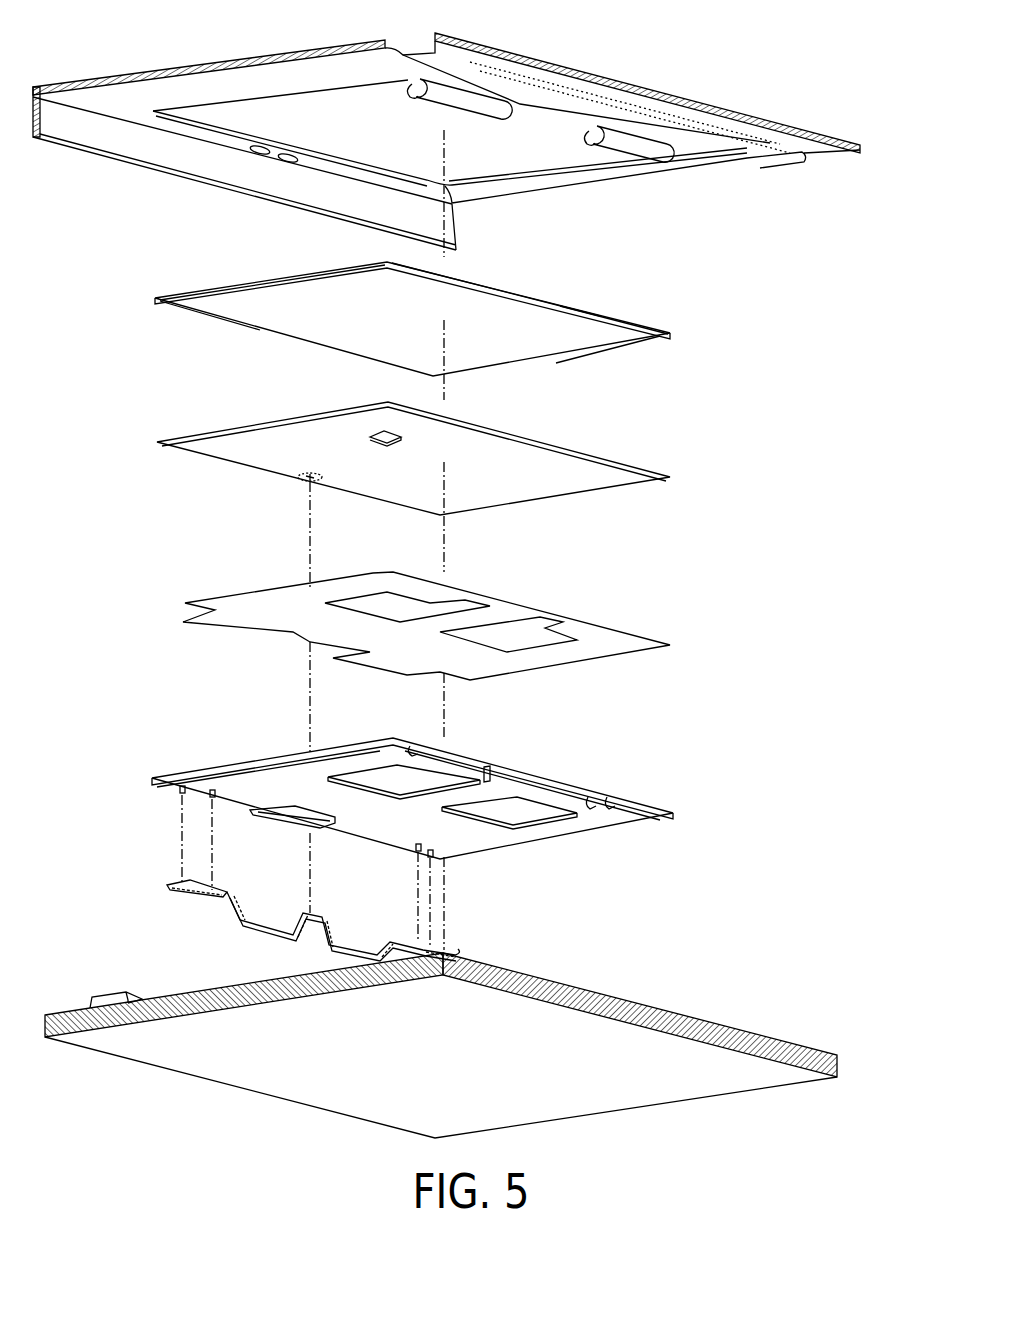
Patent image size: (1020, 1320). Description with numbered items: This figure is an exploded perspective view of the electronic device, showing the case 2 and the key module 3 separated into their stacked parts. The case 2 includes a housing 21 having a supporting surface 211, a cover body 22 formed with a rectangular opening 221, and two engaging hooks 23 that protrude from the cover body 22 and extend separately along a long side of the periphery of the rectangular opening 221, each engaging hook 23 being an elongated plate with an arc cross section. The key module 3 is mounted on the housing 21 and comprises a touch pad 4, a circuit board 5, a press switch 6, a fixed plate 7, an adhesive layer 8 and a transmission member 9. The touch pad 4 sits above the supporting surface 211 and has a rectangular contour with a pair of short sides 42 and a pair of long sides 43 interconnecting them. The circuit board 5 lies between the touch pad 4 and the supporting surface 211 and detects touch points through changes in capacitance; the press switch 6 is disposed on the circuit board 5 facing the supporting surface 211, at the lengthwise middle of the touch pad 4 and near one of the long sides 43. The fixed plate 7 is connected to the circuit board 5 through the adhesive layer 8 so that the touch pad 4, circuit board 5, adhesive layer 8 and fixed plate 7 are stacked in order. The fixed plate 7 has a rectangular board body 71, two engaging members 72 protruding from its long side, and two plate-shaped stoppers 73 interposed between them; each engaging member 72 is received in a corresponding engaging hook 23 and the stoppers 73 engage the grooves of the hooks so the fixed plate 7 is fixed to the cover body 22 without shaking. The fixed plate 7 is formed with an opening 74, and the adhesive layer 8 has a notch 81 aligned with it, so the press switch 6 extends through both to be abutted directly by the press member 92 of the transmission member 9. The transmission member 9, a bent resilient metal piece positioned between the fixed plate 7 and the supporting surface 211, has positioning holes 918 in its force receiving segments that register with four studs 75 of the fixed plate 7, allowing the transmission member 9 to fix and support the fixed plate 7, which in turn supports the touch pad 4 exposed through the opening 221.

The case 2 is at (446, 125).
The cover body 22 is at (217, 62).
The rectangular opening 221 is at (249, 120).
The engaging hooks 23 is at (607, 140).
The key module 3 is at (180, 510).
The touch pad 4 is at (412, 312).
The short sides 42 is at (268, 280).
The long sides 43 is at (480, 283).
The circuit board 5 is at (413, 463).
The press switch 6 is at (307, 485).
The adhesive layer 8 is at (425, 638).
The notch 81 is at (298, 647).
The fixed plate 7 is at (441, 794).
The board body 71 is at (363, 833).
The engaging members 72 is at (623, 798).
The plate-shaped stoppers 73 is at (487, 790).
The opening 74 is at (303, 826).
The studs 75 is at (212, 790).
The transmission member 9 is at (313, 933).
The press member 92 is at (312, 918).
The positioning holes 918 is at (213, 889).
The housing 21 is at (441, 1029).
The supporting surface 211 is at (113, 997).